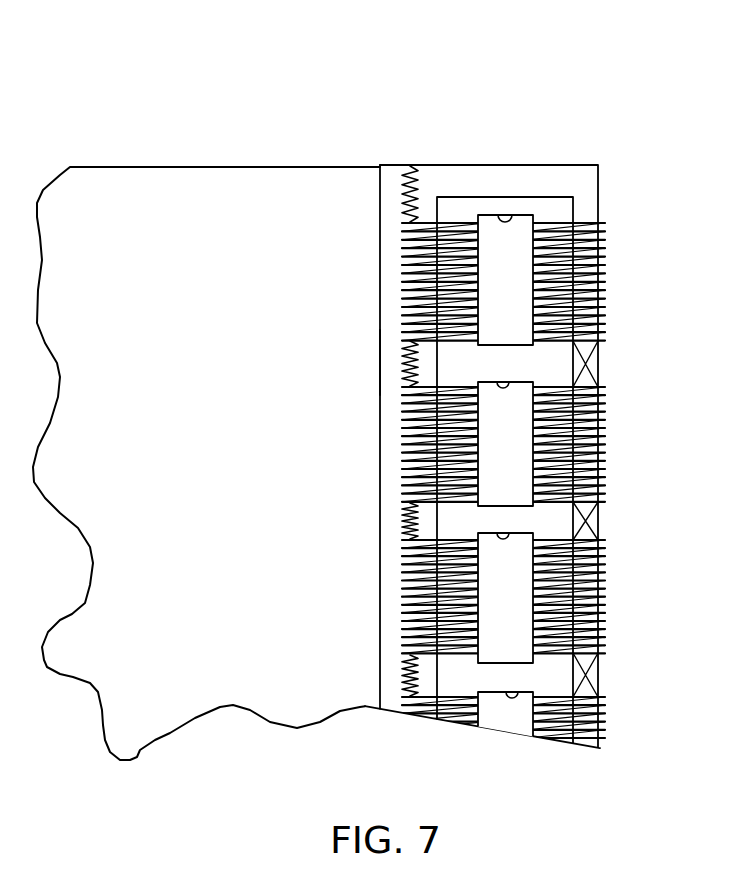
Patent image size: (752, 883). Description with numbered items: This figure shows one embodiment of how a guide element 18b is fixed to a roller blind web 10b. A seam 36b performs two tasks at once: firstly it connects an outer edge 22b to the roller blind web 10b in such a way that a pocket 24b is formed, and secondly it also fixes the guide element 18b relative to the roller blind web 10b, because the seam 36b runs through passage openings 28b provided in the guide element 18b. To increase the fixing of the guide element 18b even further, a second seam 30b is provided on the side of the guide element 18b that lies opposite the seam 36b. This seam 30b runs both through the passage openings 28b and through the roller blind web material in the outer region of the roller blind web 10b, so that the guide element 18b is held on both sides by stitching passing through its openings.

The roller blind web 10b is at (172, 167).
The guide element 18b is at (573, 212).
The outer edge 22b is at (378, 217).
The pocket 24b is at (482, 147).
The passage openings 28b is at (510, 215).
The seam 30b is at (610, 277).
The seam 36b is at (380, 362).